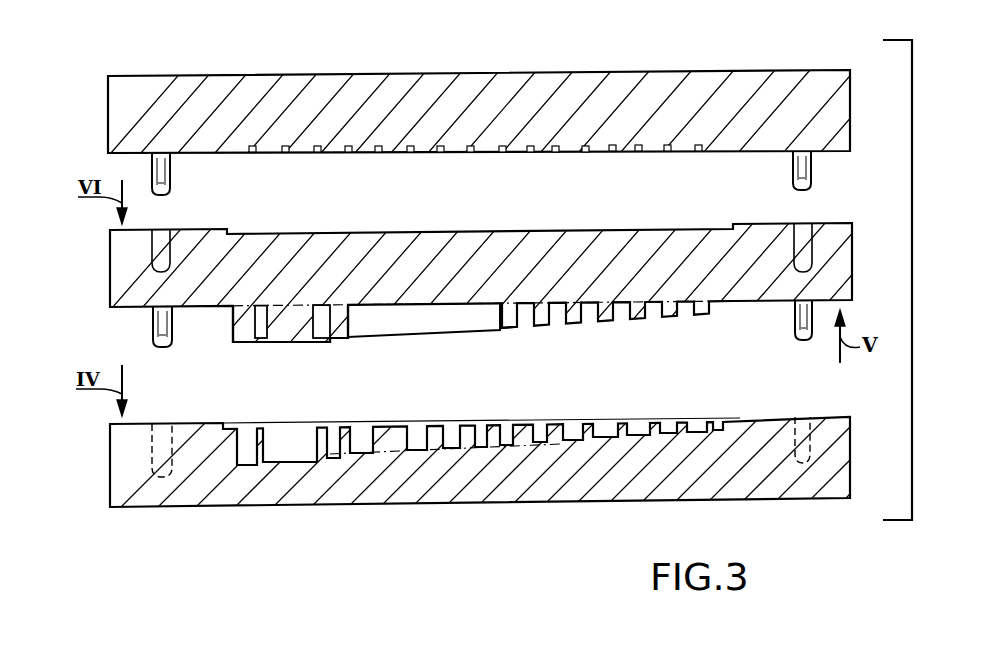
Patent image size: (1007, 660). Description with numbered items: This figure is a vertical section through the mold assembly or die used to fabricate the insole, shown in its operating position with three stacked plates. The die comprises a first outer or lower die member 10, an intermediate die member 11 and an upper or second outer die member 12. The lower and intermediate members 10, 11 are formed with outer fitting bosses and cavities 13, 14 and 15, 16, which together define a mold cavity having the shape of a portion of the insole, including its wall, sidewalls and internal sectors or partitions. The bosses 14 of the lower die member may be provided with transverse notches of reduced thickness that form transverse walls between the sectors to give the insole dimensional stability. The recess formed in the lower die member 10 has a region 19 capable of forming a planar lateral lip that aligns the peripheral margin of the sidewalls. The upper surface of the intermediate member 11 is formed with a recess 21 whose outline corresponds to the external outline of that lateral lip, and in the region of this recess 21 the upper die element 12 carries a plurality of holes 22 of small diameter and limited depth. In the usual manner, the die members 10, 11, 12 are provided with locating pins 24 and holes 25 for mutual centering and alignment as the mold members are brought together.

The lower die member 10 is at (553, 504).
The intermediate die member 11 is at (200, 293).
The upper die member 12 is at (137, 112).
The fitting boss 13 is at (290, 328).
The fitting cavity 14 is at (361, 440).
The fitting boss 15 is at (263, 341).
The fitting cavity 16 is at (292, 445).
The recess region 19 is at (745, 421).
The recess 21 is at (376, 230).
The holes 22 is at (290, 158).
The locating pins 24 is at (170, 170).
The locating holes 25 is at (157, 252).